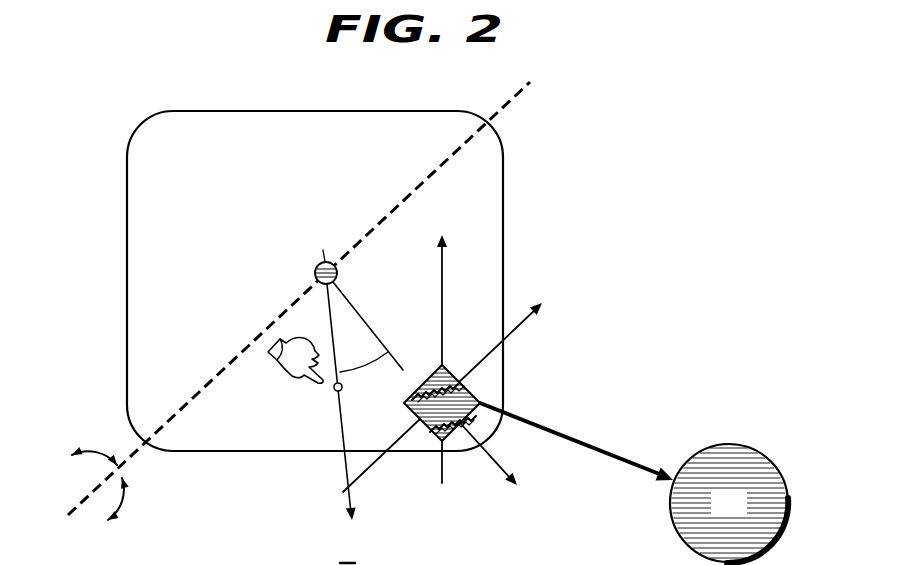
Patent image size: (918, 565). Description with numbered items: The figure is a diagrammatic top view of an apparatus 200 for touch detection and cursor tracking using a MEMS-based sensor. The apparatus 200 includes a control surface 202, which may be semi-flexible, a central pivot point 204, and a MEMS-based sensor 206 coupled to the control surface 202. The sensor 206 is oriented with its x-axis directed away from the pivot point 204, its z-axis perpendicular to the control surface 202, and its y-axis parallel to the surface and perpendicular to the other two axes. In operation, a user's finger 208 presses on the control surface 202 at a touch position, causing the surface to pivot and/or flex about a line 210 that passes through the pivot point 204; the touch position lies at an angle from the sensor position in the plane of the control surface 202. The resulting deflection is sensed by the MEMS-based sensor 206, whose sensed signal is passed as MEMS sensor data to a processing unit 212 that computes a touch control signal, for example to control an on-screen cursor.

The apparatus 200 is at (538, 213).
The control surface 202 is at (310, 111).
The central pivot point 204 is at (316, 266).
The MEMS-based sensor 206 is at (447, 438).
The user's finger 208 is at (272, 346).
The line 210 is at (84, 497).
The processing unit 212 is at (728, 443).